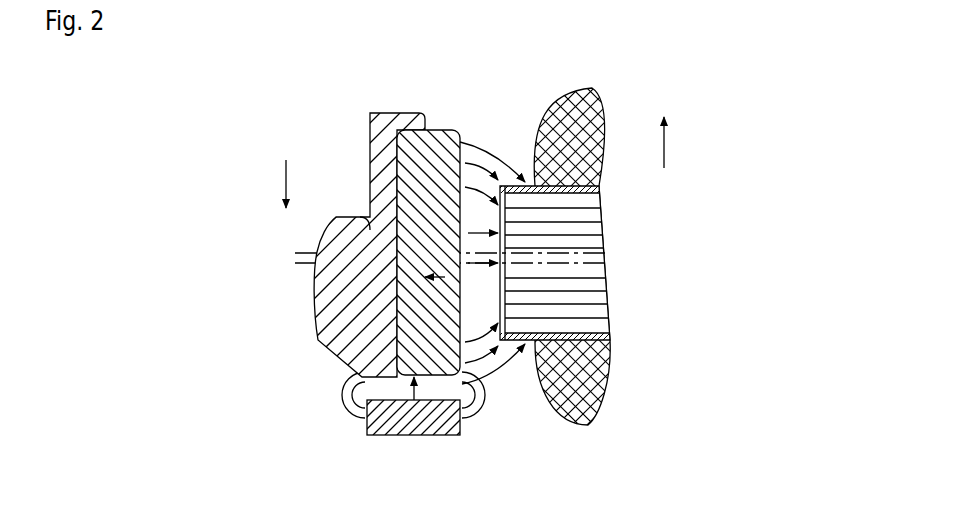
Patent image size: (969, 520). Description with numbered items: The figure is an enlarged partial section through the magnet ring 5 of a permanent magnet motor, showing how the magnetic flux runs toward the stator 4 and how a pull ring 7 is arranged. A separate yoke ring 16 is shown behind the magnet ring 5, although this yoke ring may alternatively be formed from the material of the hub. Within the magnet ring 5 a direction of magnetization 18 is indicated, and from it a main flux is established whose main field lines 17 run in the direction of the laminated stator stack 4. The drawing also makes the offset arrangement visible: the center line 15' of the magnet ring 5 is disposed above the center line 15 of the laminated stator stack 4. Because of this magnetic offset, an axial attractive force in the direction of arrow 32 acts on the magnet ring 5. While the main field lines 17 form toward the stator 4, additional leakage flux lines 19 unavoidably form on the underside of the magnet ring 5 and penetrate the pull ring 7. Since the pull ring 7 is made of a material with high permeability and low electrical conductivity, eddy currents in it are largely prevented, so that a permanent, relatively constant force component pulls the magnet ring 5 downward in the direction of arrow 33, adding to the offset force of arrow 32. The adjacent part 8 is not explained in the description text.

The stator 4 is at (582, 213).
The magnet ring 5 is at (434, 146).
The pull ring 7 is at (397, 400).
The housing part 8 is at (590, 135).
The center line of the laminated stator stack 15 is at (547, 299).
The center line of the magnet ring 15' is at (550, 236).
The yoke ring 16 is at (378, 160).
The main field lines 17 is at (488, 143).
The direction of magnetization 18 is at (418, 282).
The leakage flux lines 19 is at (478, 410).
The arrow 32 is at (283, 178).
The arrow 33 is at (414, 384).